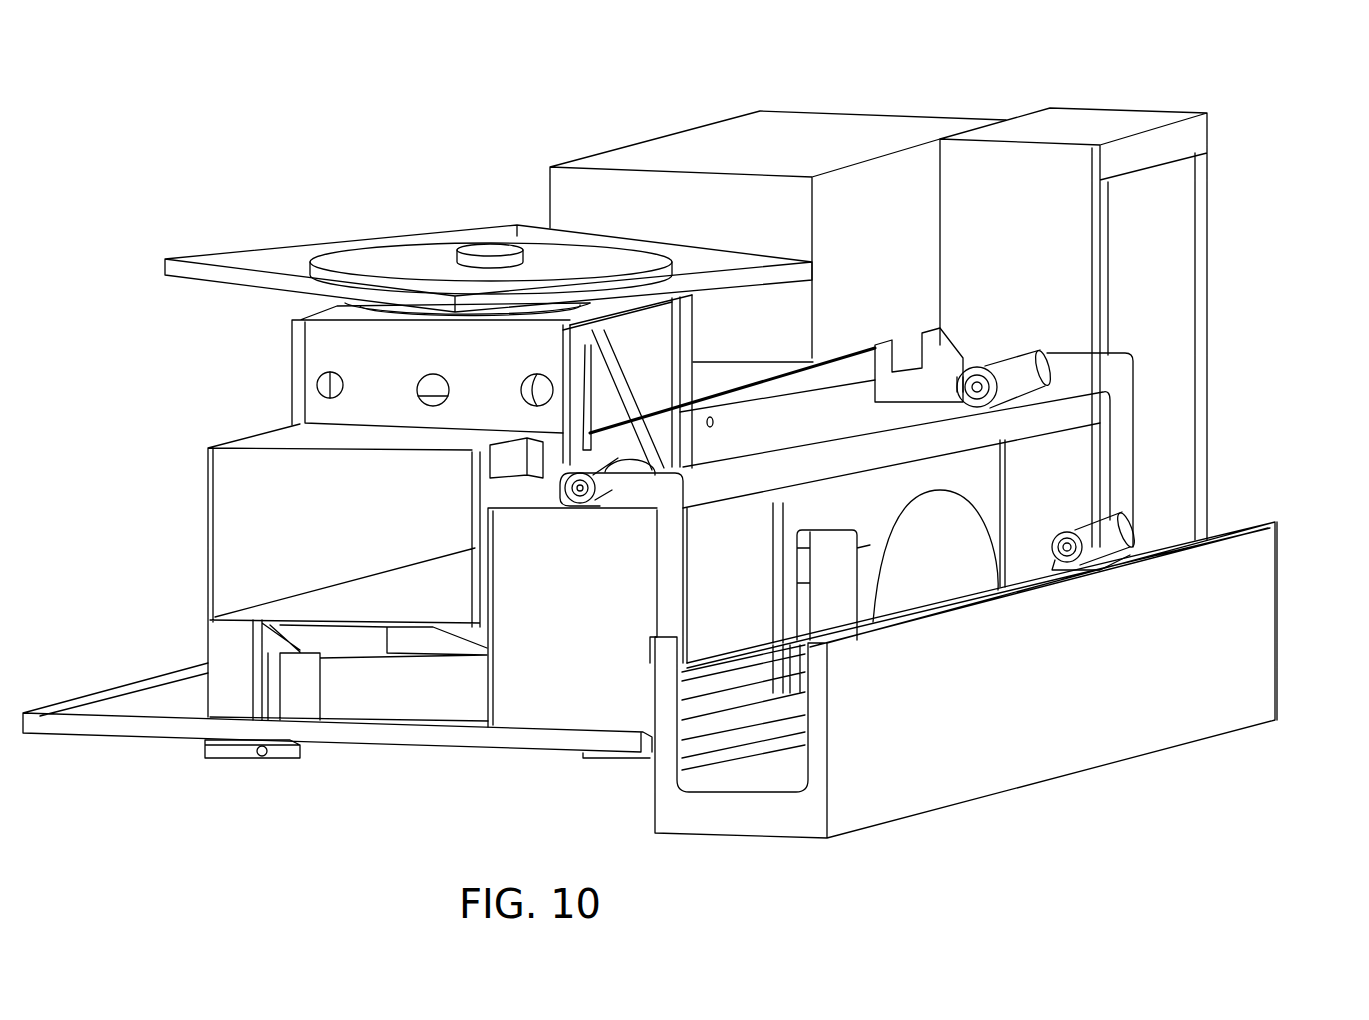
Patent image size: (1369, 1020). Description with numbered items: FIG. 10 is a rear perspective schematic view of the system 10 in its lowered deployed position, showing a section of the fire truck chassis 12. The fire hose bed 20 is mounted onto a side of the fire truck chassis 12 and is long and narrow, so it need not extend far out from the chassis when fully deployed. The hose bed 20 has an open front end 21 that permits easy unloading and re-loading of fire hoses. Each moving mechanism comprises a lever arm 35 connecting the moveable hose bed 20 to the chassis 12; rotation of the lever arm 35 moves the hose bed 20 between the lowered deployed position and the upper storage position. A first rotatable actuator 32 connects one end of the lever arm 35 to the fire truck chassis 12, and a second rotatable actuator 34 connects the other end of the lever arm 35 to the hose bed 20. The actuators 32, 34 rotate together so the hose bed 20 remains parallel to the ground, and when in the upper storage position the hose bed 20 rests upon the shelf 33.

The system 10 is at (1304, 227).
The fire truck chassis 12 is at (665, 155).
The fire hose bed 20 is at (965, 768).
The open front end 21 is at (766, 775).
The first rotatable actuator 32 is at (1010, 368).
The shelf 33 is at (815, 437).
The second rotatable actuator 34 is at (1127, 513).
The lever arm 35 is at (1127, 403).